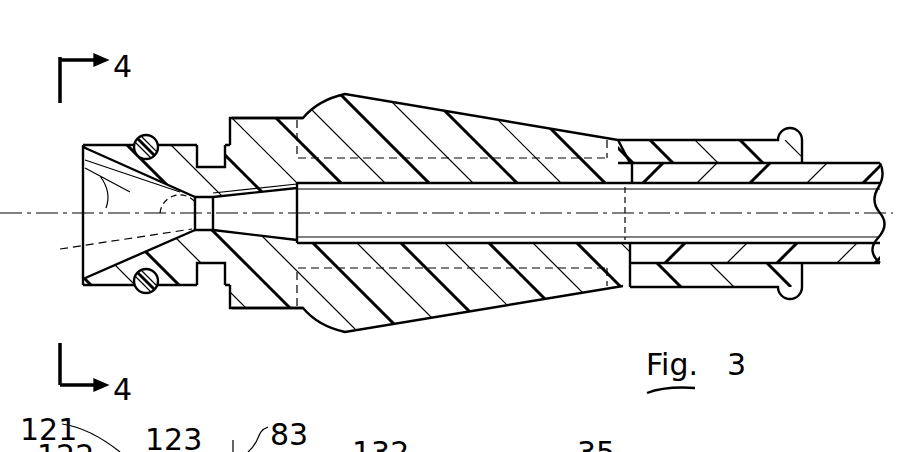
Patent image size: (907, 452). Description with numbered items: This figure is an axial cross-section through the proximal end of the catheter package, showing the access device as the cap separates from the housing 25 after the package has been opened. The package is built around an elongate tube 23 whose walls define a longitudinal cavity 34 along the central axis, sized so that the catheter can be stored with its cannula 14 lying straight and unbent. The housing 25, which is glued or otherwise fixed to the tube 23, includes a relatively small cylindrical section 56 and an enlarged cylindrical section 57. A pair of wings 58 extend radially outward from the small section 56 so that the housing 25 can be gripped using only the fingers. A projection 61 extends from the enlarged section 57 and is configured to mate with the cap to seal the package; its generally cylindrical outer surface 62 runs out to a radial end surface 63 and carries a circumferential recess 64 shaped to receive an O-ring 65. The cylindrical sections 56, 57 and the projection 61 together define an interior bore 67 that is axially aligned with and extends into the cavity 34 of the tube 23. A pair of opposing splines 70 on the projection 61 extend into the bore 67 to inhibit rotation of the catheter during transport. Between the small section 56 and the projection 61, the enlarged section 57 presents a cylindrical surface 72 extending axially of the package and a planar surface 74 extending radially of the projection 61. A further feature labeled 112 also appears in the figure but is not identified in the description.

The cannula 14 is at (446, 166).
The elongate tube 23 is at (834, 148).
The housing 25 is at (487, 328).
The longitudinal cavity 34 is at (843, 224).
The relatively small cylindrical section 56 is at (540, 168).
The enlarged cylindrical section 57 is at (278, 117).
The wings 58 is at (427, 118).
The projection 61 is at (90, 293).
The cylindrical outer surface 62 is at (190, 144).
The radial end surface 63 is at (83, 281).
The circumferential recess 64 is at (147, 140).
The O-ring 65 is at (138, 291).
The interior bore 67 is at (418, 227).
The splines 70 is at (130, 193).
The cylindrical surface 72 is at (277, 313).
The planar surface 74 is at (215, 292).
The hidden nozzle passage 112 is at (106, 232).